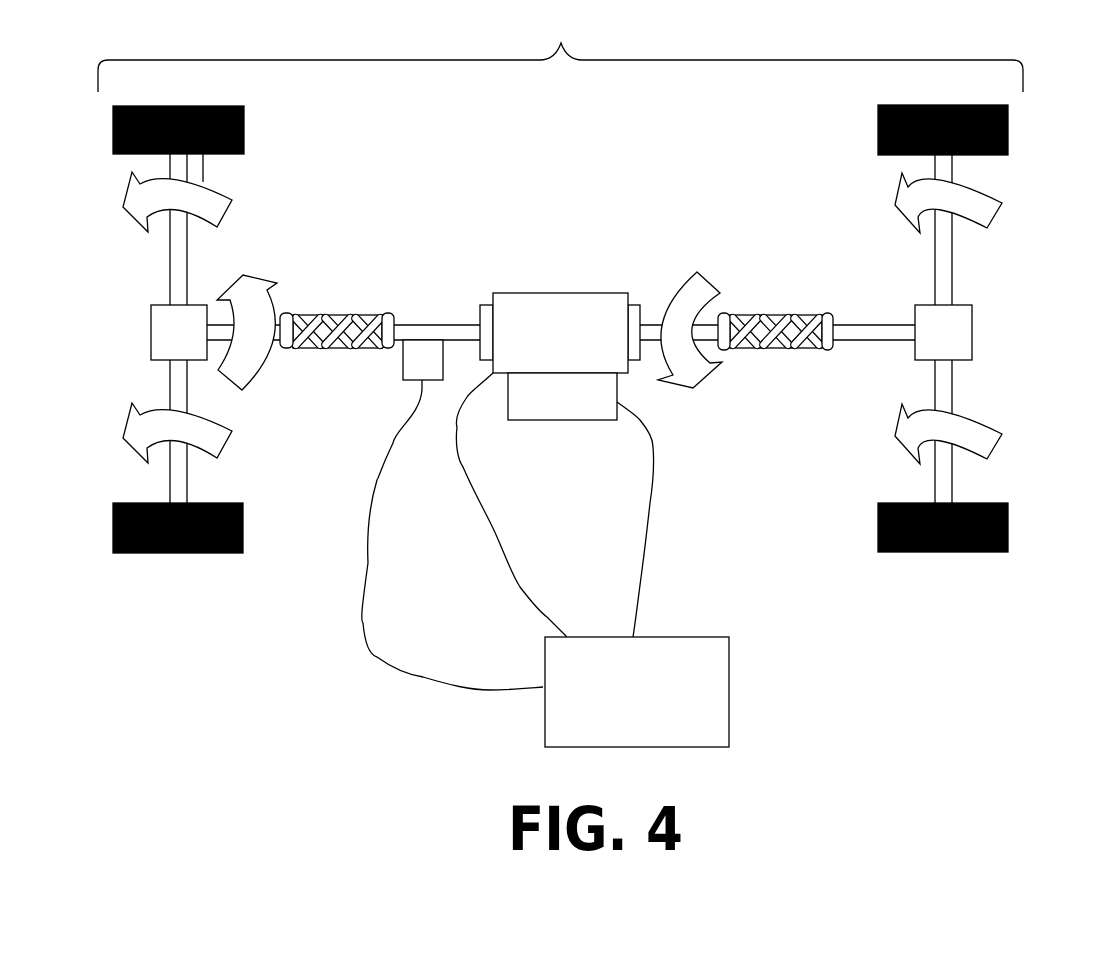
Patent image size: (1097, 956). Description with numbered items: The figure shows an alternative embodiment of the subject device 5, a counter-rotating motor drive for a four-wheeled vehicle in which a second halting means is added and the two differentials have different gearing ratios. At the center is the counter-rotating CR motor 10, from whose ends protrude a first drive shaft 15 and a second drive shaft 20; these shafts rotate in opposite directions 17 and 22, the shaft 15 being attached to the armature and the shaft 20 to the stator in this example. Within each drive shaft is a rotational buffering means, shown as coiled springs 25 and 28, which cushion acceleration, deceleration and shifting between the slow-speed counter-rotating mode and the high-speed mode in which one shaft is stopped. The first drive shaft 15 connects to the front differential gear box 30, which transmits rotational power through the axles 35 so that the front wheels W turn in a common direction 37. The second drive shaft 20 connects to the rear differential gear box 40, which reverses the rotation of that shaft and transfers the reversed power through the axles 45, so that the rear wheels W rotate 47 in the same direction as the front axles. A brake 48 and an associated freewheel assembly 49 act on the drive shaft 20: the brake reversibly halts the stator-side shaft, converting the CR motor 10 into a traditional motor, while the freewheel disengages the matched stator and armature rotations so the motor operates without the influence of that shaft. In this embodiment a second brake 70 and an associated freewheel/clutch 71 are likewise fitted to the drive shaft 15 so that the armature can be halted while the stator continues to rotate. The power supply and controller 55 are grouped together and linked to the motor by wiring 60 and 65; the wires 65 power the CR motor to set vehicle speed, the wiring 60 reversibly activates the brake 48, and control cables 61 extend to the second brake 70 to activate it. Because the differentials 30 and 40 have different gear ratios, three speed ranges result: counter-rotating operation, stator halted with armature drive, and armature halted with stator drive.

The device 5 is at (560, 54).
The wheels W is at (243, 120).
The counter-rotating (CR) motor 10 is at (562, 293).
The first drive shaft 15 is at (403, 323).
The rotational direction of first drive shaft 17 is at (277, 307).
The second drive shaft 20 is at (863, 325).
The rotational direction of second drive shaft 22 is at (712, 282).
The coiled spring 25 is at (338, 313).
The coiled spring 28 is at (767, 350).
The front differential gear box 30 is at (150, 342).
The front axles 35 is at (170, 278).
The common rotational direction of front wheels 37 is at (227, 210).
The rear differential gear box 40 is at (973, 327).
The rear axles 45 is at (952, 262).
The rotational direction of rear axles 47 is at (997, 217).
The brake 48 is at (543, 420).
The freewheel assembly 49 is at (642, 303).
The power supply and controller 55 is at (730, 700).
The wiring 60 is at (647, 512).
The control wiring/cables 61 is at (360, 620).
The wires 65 is at (507, 562).
The second brake 70 is at (403, 360).
The freewheel/clutch 71 is at (483, 302).